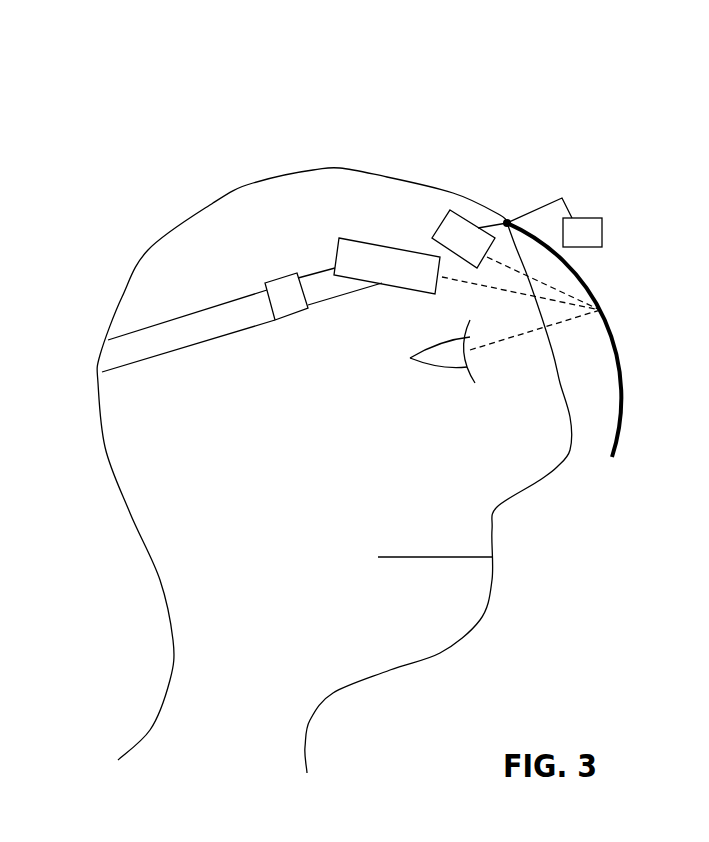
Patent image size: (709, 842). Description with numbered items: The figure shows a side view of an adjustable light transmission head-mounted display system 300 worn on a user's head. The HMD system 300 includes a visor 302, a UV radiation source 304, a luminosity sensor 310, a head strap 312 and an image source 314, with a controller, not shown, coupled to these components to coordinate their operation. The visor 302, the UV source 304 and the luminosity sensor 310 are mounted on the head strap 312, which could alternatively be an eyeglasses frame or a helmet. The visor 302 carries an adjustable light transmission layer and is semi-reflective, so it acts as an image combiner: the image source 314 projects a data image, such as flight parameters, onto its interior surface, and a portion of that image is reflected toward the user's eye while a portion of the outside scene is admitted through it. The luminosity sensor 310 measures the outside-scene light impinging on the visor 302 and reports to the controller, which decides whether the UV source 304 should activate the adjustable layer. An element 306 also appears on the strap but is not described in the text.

The HMD system 300 is at (476, 87).
The visor 302 is at (620, 427).
The UV radiation source 304 is at (437, 223).
The strap adjustment component 306 is at (280, 275).
The luminosity sensor 310 is at (605, 227).
The head strap 312 is at (135, 328).
The image source 314 is at (393, 290).